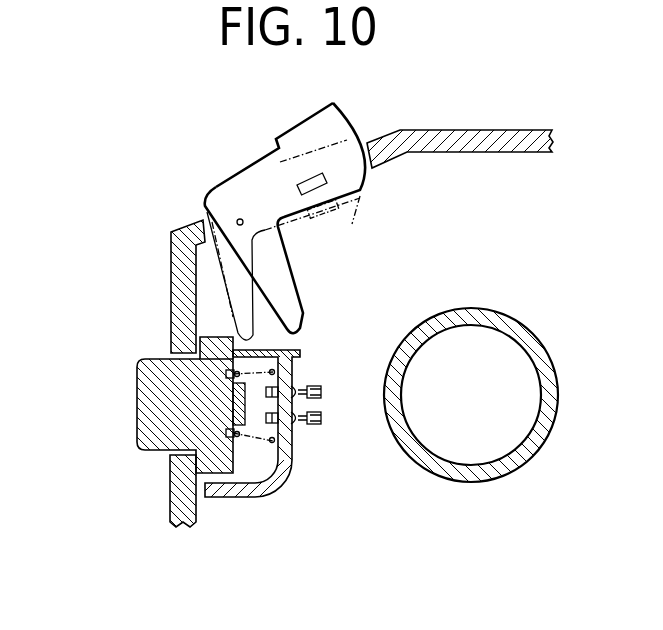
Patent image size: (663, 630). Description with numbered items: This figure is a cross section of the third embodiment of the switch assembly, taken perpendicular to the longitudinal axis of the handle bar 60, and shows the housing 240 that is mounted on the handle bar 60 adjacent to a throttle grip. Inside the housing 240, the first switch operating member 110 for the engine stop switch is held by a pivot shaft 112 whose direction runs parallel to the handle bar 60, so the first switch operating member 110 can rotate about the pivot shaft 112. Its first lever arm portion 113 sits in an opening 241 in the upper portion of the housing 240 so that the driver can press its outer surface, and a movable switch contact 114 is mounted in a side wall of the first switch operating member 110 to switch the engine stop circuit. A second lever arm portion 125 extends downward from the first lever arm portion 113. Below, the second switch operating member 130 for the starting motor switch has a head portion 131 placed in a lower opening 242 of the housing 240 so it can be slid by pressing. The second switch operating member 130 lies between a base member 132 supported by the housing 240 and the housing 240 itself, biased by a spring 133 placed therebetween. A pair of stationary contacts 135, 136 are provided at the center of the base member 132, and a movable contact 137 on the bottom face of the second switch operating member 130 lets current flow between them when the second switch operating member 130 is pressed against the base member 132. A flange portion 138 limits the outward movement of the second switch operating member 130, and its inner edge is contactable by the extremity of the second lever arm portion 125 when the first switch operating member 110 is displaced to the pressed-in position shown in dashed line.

The handle bar 60 is at (530, 334).
The first switch operating member 110 is at (348, 110).
The pivot shaft 112 is at (238, 219).
The first lever arm portion 113 is at (290, 137).
The movable switch contact 114 is at (323, 180).
The second lever arm portion 125 is at (285, 295).
The second switch operating member 130 is at (128, 386).
The head portion 131 is at (140, 420).
The base member 132 is at (247, 497).
The spring 133 is at (283, 350).
The stationary contact 135 is at (285, 387).
The stationary contact 136 is at (288, 432).
The movable contact 137 is at (235, 408).
The flange portion 138 is at (207, 333).
The housing 240 is at (483, 130).
The opening 241 is at (196, 210).
The opening 242 is at (160, 348).